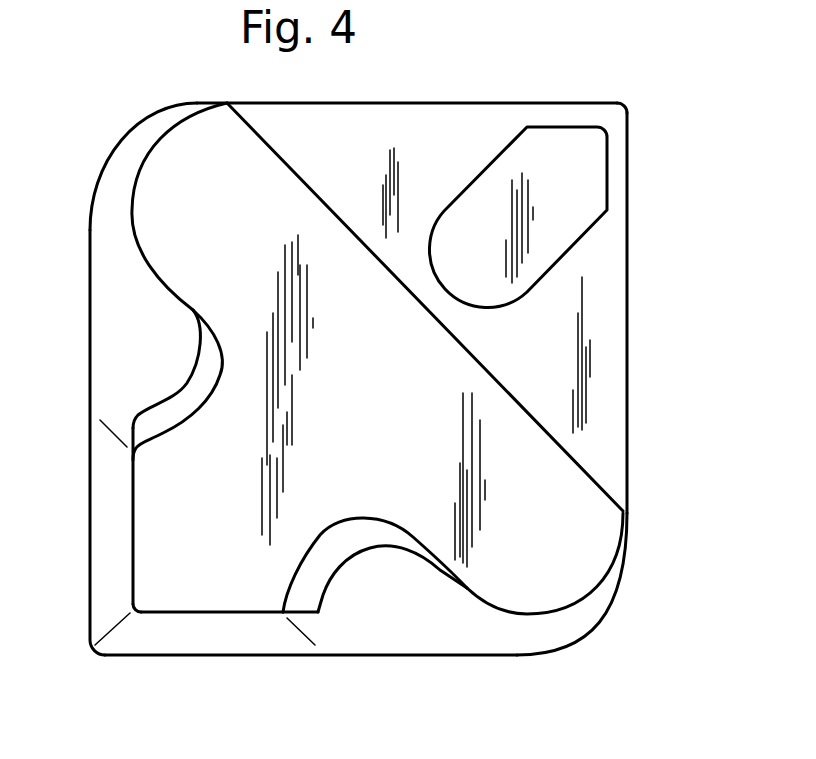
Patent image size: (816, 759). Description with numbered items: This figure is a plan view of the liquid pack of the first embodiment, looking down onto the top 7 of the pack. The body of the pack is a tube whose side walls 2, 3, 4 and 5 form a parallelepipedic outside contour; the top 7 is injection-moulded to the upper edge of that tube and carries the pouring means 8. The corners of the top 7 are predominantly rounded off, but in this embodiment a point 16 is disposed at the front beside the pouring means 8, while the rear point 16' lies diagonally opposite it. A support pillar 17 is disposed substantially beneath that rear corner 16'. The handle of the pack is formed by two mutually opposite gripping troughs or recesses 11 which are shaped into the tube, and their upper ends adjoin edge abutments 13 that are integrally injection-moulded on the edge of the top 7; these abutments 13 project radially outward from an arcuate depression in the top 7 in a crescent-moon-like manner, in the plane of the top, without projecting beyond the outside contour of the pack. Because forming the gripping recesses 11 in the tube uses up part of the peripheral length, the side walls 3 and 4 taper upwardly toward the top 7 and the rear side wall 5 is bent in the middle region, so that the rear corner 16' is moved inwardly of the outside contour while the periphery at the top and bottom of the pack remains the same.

The side wall 2 is at (628, 310).
The side wall 3 is at (370, 655).
The side wall 4 is at (88, 332).
The rear side wall 5 is at (412, 103).
The top 7 is at (162, 508).
The pouring means 8 is at (595, 180).
The gripping recess 11 is at (368, 522).
The edge abutment 13 is at (172, 408).
The point 16 is at (644, 85).
The rear point 16' is at (136, 672).
The support pillar 17 is at (212, 612).